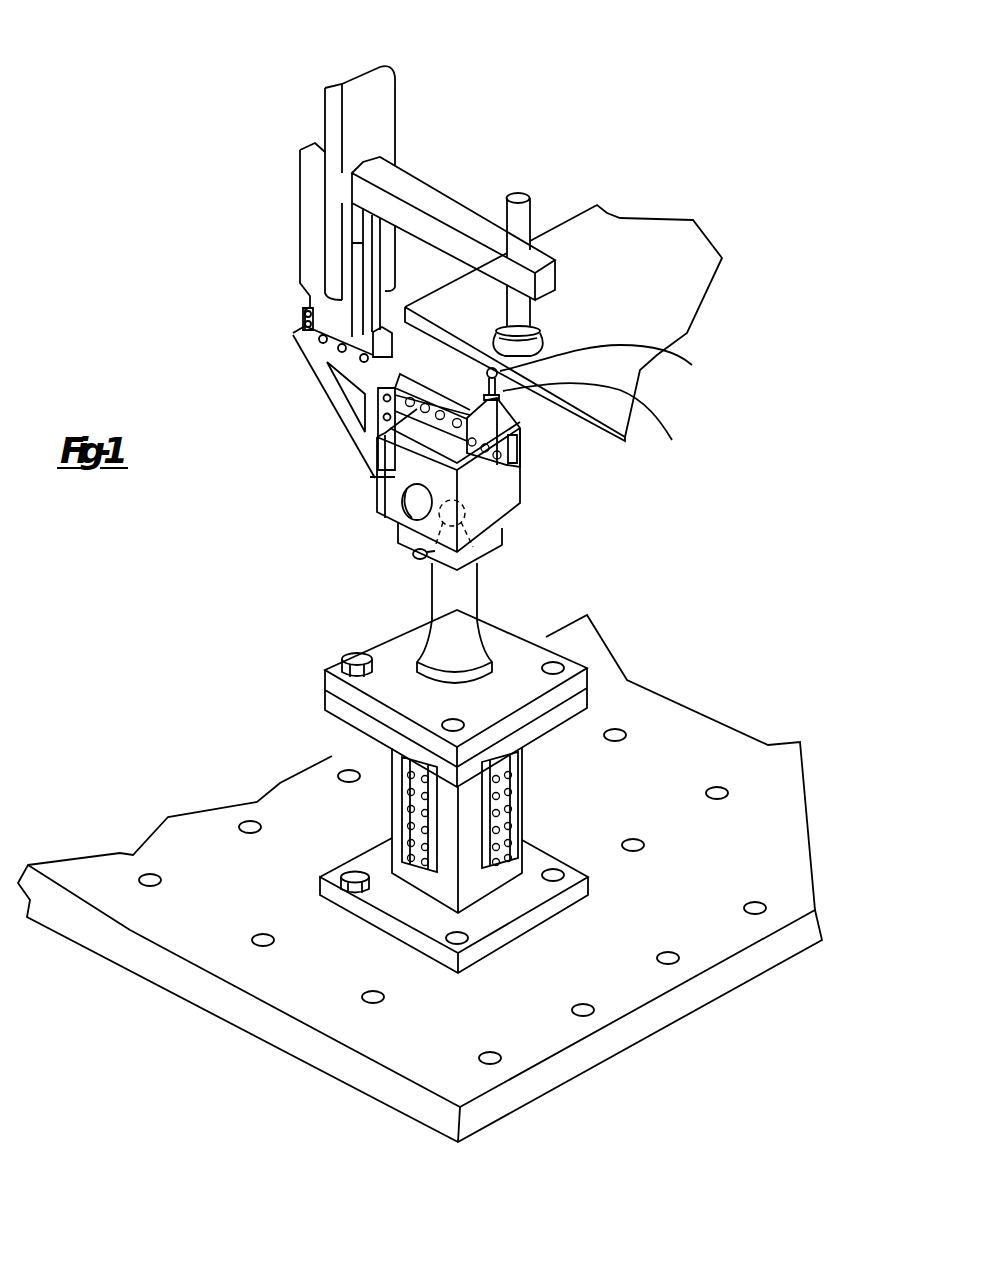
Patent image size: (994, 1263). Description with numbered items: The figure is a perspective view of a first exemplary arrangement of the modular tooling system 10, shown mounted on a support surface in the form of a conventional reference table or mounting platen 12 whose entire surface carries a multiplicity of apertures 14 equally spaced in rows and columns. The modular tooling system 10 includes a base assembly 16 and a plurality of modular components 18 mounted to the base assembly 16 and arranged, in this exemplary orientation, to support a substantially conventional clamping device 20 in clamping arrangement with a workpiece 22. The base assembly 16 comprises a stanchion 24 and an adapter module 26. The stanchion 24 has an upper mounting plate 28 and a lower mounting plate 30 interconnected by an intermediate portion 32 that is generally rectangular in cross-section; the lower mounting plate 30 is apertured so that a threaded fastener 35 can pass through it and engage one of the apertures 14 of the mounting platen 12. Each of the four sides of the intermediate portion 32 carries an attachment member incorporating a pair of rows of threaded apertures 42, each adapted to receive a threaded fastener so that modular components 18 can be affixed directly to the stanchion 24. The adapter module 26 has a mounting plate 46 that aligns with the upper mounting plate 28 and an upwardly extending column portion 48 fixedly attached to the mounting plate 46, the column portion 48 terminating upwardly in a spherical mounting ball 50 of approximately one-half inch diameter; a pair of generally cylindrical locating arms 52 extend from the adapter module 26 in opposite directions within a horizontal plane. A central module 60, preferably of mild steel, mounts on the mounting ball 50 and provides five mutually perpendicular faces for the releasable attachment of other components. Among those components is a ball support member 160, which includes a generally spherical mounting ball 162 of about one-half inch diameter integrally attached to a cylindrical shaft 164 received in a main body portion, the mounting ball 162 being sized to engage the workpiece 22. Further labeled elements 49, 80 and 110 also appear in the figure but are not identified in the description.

The modular tooling system 10 is at (150, 272).
The mounting platen 12 is at (133, 863).
The apertures 14 is at (253, 940).
The base assembly 16 is at (590, 693).
The modular components 18 is at (375, 522).
The clamping device 20 is at (318, 78).
The workpiece 22 is at (602, 230).
The stanchion 24 is at (383, 823).
The adapter module 26 is at (286, 688).
The upper mounting plate 28 is at (590, 713).
The lower mounting plate 30 is at (568, 884).
The intermediate portion 32 is at (518, 823).
The threaded fastener 35 is at (345, 658).
The threaded apertures 42 is at (505, 777).
The mounting plate 46 is at (512, 650).
The upwardly extending column portion 48 is at (627, 680).
The post 49 is at (470, 601).
The spherical mounting ball 50 is at (462, 511).
The locating arms 52 is at (418, 549).
The central module 60 is at (381, 481).
The rail 80 is at (453, 393).
The support bracket 110 is at (307, 360).
The ball support member 160 is at (510, 417).
The spherical mounting ball 162 is at (680, 358).
The cylindrical shaft 164 is at (604, 419).